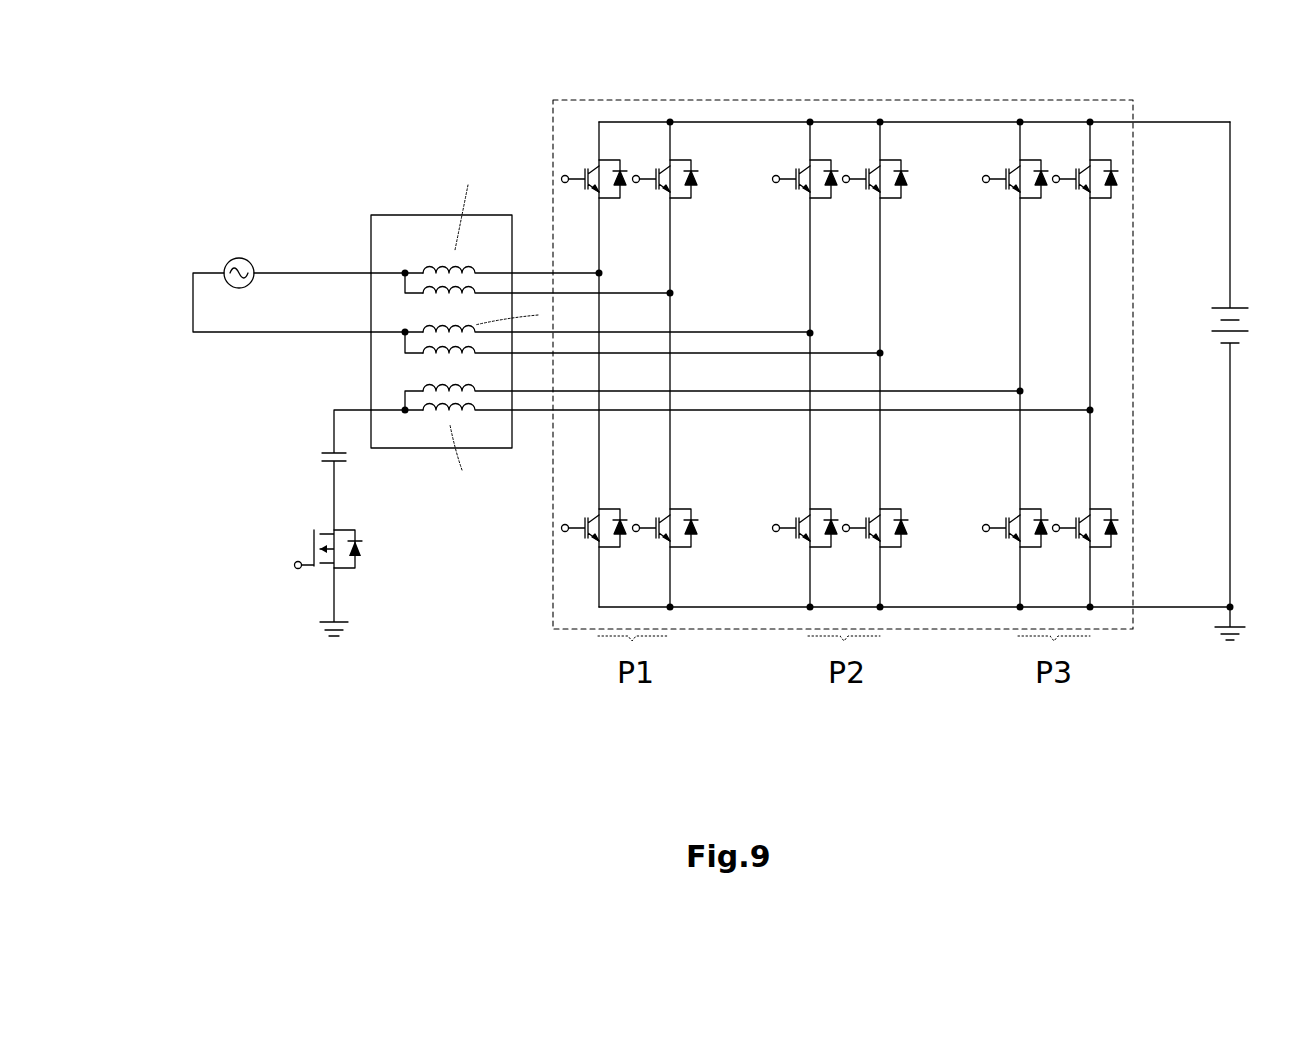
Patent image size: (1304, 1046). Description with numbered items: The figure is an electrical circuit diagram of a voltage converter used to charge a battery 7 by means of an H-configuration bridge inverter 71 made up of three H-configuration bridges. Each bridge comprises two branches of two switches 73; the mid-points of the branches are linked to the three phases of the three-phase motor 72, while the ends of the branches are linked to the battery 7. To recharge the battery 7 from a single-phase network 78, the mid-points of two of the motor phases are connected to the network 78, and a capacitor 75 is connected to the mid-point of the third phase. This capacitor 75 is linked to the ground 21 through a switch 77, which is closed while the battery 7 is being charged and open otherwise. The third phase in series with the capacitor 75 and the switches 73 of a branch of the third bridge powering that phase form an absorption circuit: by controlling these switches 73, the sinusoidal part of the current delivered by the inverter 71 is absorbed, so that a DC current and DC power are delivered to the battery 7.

The battery 7 is at (1235, 290).
The ground 21 is at (1228, 645).
The H-configuration bridge inverter 71 is at (1030, 99).
The three-phase motor 72 is at (395, 213).
The switches 73 is at (857, 353).
The capacitor 75 is at (325, 452).
The switch 77 is at (304, 546).
The single-phase network 78 is at (236, 258).